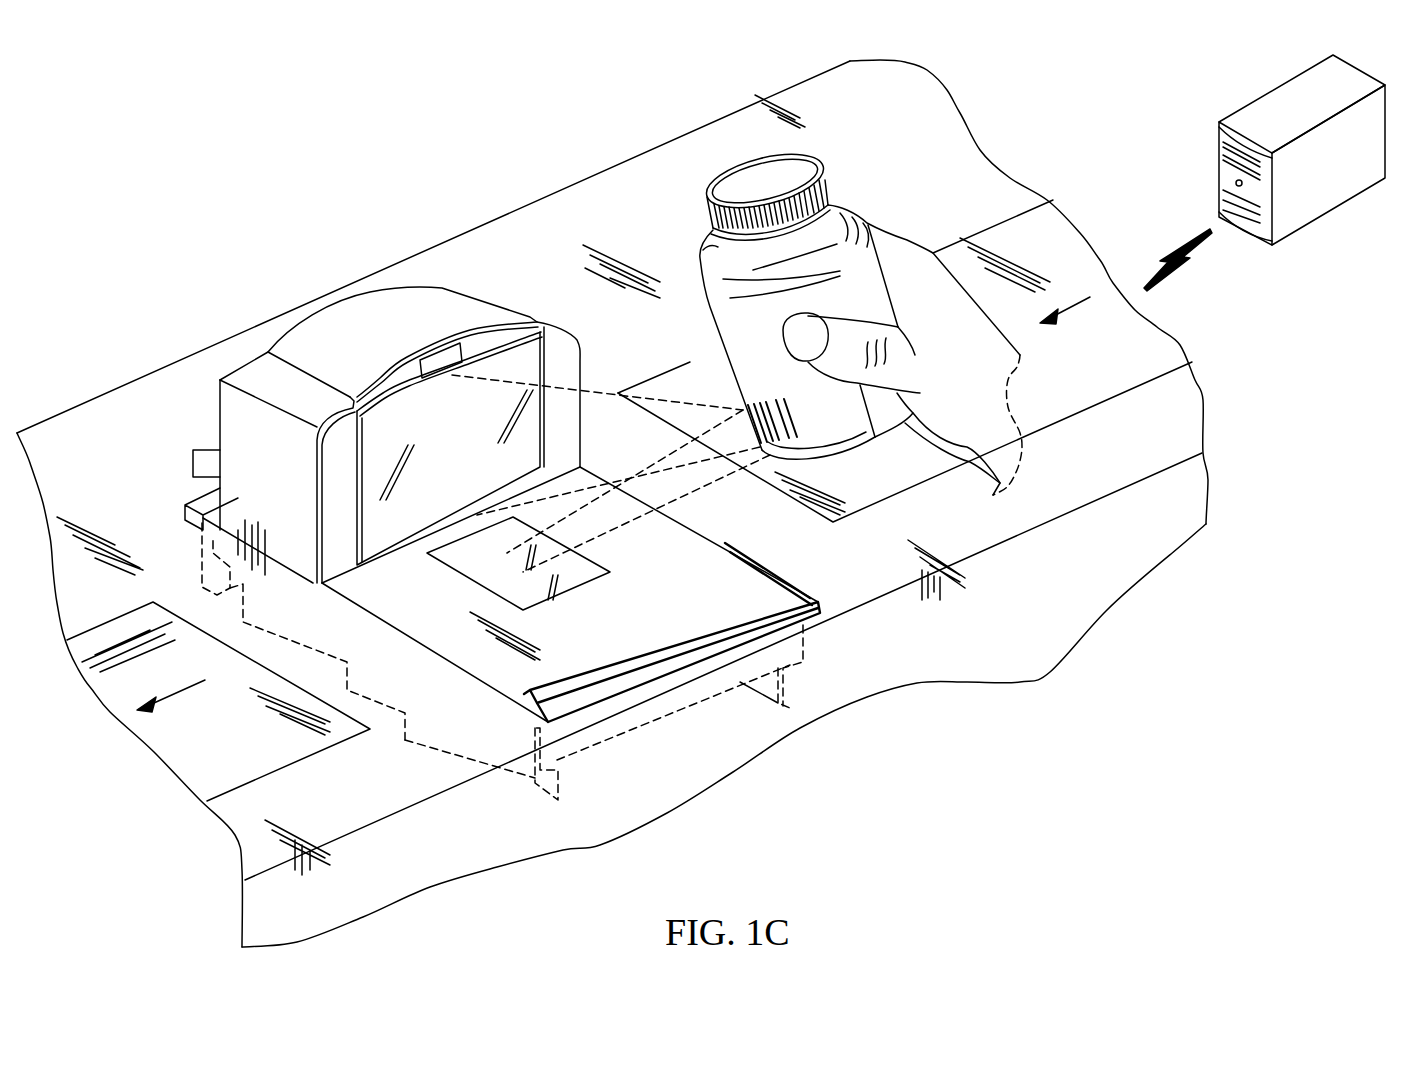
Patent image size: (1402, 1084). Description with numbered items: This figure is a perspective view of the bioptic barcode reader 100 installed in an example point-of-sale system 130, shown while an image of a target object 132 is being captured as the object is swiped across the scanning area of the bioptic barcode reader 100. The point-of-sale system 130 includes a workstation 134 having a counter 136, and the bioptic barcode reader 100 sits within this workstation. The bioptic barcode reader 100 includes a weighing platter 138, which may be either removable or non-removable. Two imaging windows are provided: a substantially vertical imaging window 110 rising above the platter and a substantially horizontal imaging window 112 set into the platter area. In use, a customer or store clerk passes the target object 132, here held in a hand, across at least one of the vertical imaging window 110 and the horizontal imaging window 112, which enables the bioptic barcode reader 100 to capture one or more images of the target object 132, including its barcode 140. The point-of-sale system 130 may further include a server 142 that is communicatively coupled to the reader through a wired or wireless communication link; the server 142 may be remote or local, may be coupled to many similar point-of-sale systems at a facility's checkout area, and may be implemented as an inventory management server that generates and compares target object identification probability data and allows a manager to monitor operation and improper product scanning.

The bioptic barcode reader 100 is at (322, 309).
The substantially vertical imaging window 110 is at (388, 417).
The substantially horizontal imaging window 112 is at (565, 585).
The point-of-sale (POS) system 130 is at (194, 192).
The target object 132 is at (870, 262).
The workstation 134 is at (506, 203).
The counter 136 is at (934, 137).
The weighing platter 138 is at (510, 675).
The barcode 140 is at (771, 413).
The server 142 is at (1218, 168).